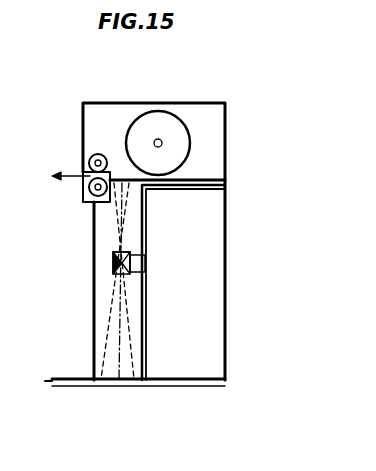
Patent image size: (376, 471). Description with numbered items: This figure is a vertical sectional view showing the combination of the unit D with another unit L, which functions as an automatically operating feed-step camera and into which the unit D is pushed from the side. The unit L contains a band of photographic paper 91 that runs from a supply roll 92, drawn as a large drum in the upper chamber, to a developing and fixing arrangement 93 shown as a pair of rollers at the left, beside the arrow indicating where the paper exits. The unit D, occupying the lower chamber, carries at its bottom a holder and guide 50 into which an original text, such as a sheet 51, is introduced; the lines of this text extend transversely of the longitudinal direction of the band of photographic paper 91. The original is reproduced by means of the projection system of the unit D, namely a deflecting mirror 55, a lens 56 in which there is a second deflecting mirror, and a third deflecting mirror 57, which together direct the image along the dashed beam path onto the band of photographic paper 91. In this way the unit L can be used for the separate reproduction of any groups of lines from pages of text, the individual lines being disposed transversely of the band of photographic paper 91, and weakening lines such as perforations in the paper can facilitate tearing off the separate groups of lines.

The unit L is at (214, 98).
The unit D is at (227, 233).
The supply roll 92 is at (155, 122).
The band of photographic paper 91 is at (123, 178).
The developing and fixing arrangement 93 is at (89, 160).
The deflecting mirror 55 is at (130, 272).
The lens 56 is at (145, 264).
The third deflecting mirror 57 is at (129, 254).
The holder and guide 50 is at (83, 387).
The sheet 51 is at (45, 382).